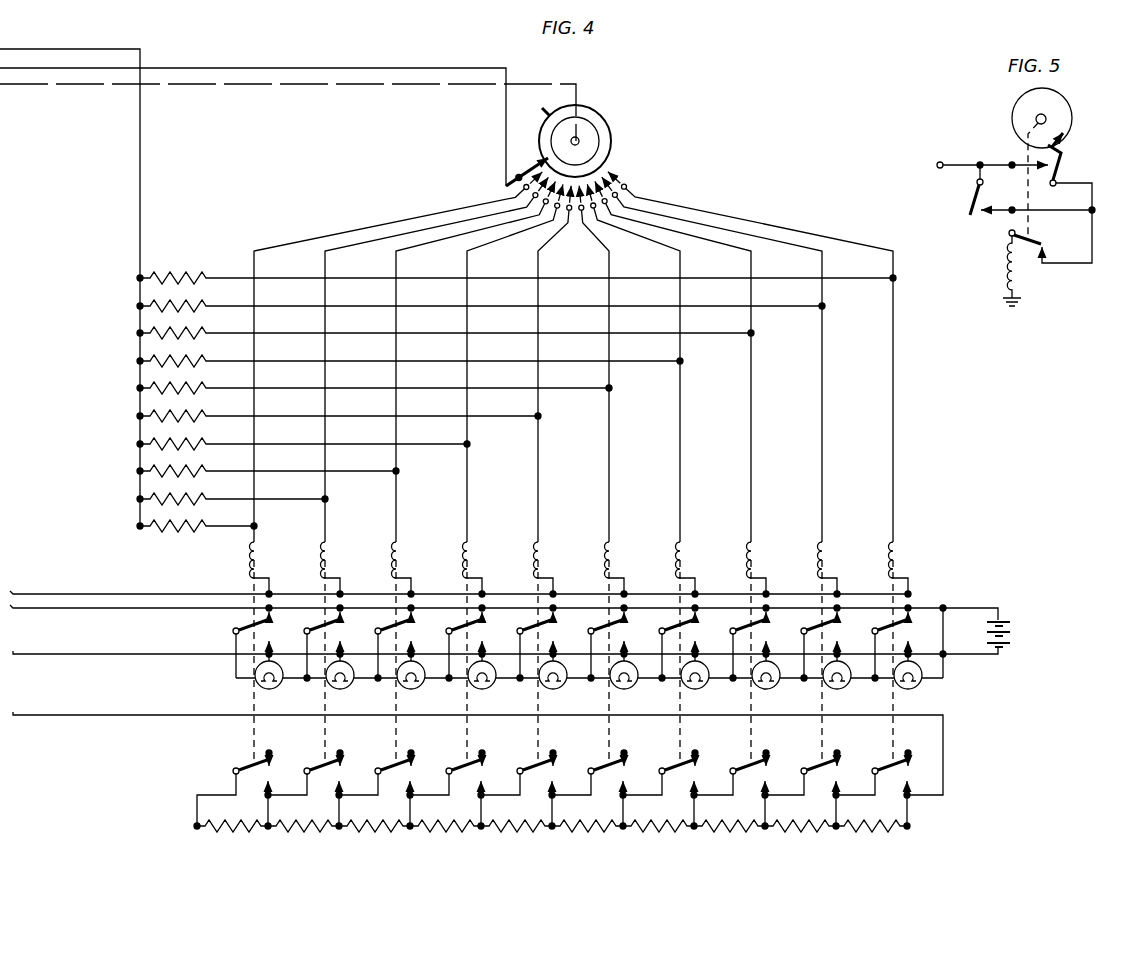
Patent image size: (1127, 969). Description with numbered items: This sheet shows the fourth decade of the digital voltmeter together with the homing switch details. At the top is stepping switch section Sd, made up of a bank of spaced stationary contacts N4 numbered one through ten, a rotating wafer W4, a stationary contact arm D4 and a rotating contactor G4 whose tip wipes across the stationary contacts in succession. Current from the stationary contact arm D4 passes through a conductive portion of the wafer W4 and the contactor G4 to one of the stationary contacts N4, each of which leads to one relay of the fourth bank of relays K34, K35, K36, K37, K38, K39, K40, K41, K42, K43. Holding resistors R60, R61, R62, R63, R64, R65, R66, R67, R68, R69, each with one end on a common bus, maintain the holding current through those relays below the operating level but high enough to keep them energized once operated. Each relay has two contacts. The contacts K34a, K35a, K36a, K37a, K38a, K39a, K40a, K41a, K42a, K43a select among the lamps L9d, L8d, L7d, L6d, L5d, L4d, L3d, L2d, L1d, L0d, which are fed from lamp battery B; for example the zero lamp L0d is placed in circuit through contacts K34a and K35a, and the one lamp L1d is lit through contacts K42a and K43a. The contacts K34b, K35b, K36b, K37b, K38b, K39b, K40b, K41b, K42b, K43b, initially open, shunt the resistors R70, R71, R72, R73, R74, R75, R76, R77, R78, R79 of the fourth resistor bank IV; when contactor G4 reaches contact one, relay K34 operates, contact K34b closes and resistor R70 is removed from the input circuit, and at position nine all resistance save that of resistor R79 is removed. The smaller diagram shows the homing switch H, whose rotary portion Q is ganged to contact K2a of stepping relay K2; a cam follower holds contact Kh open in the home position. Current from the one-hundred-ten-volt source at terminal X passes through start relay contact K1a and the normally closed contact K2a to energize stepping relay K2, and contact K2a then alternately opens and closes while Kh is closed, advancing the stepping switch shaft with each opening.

In FIG. 4, the holding resistor R60 is at (204, 278).
In FIG. 4, the holding resistor R61 is at (204, 306).
In FIG. 4, the holding resistor R62 is at (204, 333).
In FIG. 4, the holding resistor R63 is at (204, 361).
In FIG. 4, the holding resistor R64 is at (204, 388).
In FIG. 4, the holding resistor R65 is at (204, 416).
In FIG. 4, the holding resistor R66 is at (204, 444).
In FIG. 4, the holding resistor R67 is at (204, 471).
In FIG. 4, the holding resistor R68 is at (204, 499).
In FIG. 4, the holding resistor R69 is at (204, 526).
In FIG. 4, the relay K34 is at (259, 546).
In FIG. 4, the relay K35 is at (349, 562).
In FIG. 4, the relay K36 is at (420, 562).
In FIG. 4, the relay K37 is at (491, 562).
In FIG. 4, the relay K38 is at (562, 562).
In FIG. 4, the relay K39 is at (633, 562).
In FIG. 4, the relay K40 is at (704, 562).
In FIG. 4, the relay K41 is at (775, 562).
In FIG. 4, the relay K42 is at (846, 562).
In FIG. 4, the relay K43 is at (917, 562).
In FIG. 4, the relay contact K34a is at (236, 628).
In FIG. 4, the relay contact K35a is at (307, 641).
In FIG. 4, the relay contact K36a is at (378, 641).
In FIG. 4, the relay contact K37a is at (449, 641).
In FIG. 4, the relay contact K38a is at (520, 641).
In FIG. 4, the relay contact K39a is at (591, 641).
In FIG. 4, the relay contact K40a is at (662, 641).
In FIG. 4, the relay contact K41a is at (733, 641).
In FIG. 4, the relay contact K42a is at (804, 641).
In FIG. 4, the relay contact K43a is at (875, 641).
In FIG. 4, the relay contact K34b is at (247, 762).
In FIG. 4, the relay contact K35b is at (306, 761).
In FIG. 4, the relay contact K36b is at (377, 761).
In FIG. 4, the relay contact K37b is at (448, 761).
In FIG. 4, the relay contact K38b is at (519, 761).
In FIG. 4, the relay contact K39b is at (590, 761).
In FIG. 4, the relay contact K40b is at (661, 761).
In FIG. 4, the relay contact K41b is at (732, 761).
In FIG. 4, the relay contact K42b is at (803, 761).
In FIG. 4, the relay contact K43b is at (874, 761).
In FIG. 4, the lamp L9d is at (264, 689).
In FIG. 4, the lamp L8d is at (346, 677).
In FIG. 4, the lamp L7d is at (417, 677).
In FIG. 4, the lamp L6d is at (488, 677).
In FIG. 4, the lamp L5d is at (559, 677).
In FIG. 4, the lamp L4d is at (630, 677).
In FIG. 4, the lamp L3d is at (701, 677).
In FIG. 4, the lamp L2d is at (772, 677).
In FIG. 4, the "1" lamp L1d is at (843, 677).
In FIG. 4, the "0" lamp L0d is at (914, 677).
In FIG. 4, the resistor R70 is at (244, 836).
In FIG. 4, the resistor R71 is at (305, 825).
In FIG. 4, the resistor R72 is at (376, 825).
In FIG. 4, the resistor R73 is at (447, 825).
In FIG. 4, the resistor R74 is at (518, 825).
In FIG. 4, the resistor R75 is at (589, 825).
In FIG. 4, the resistor R76 is at (660, 825).
In FIG. 4, the resistor R77 is at (731, 825).
In FIG. 4, the resistor R78 is at (802, 825).
In FIG. 4, the resistor R79 is at (873, 825).
In FIG. 4, the rotating contactor G4 is at (580, 108).
In FIG. 4, the rotating wafer W4 is at (596, 128).
In FIG. 4, the homing switch H is at (580, 141).
In FIG. 5, the homing switch H is at (1072, 131).
In FIG. 4, the stepping switch section Sd is at (562, 104).
In FIG. 4, the stationary contact arm D4 is at (539, 163).
In FIG. 4, the stationary contacts N4 is at (618, 174).
In FIG. 4, the lamp battery B is at (1006, 615).
In FIG. 4, the fourth bank of resistors IV is at (190, 832).
In FIG. 5, the rotary portion Q is at (1016, 108).
In FIG. 5, the terminal X is at (984, 164).
In FIG. 5, the homing switch contact Kh is at (1058, 167).
In FIG. 5, the start relay contact K1a is at (972, 199).
In FIG. 5, the stepping relay contact K2a is at (1039, 239).
In FIG. 5, the stepping relay K2 is at (1006, 282).